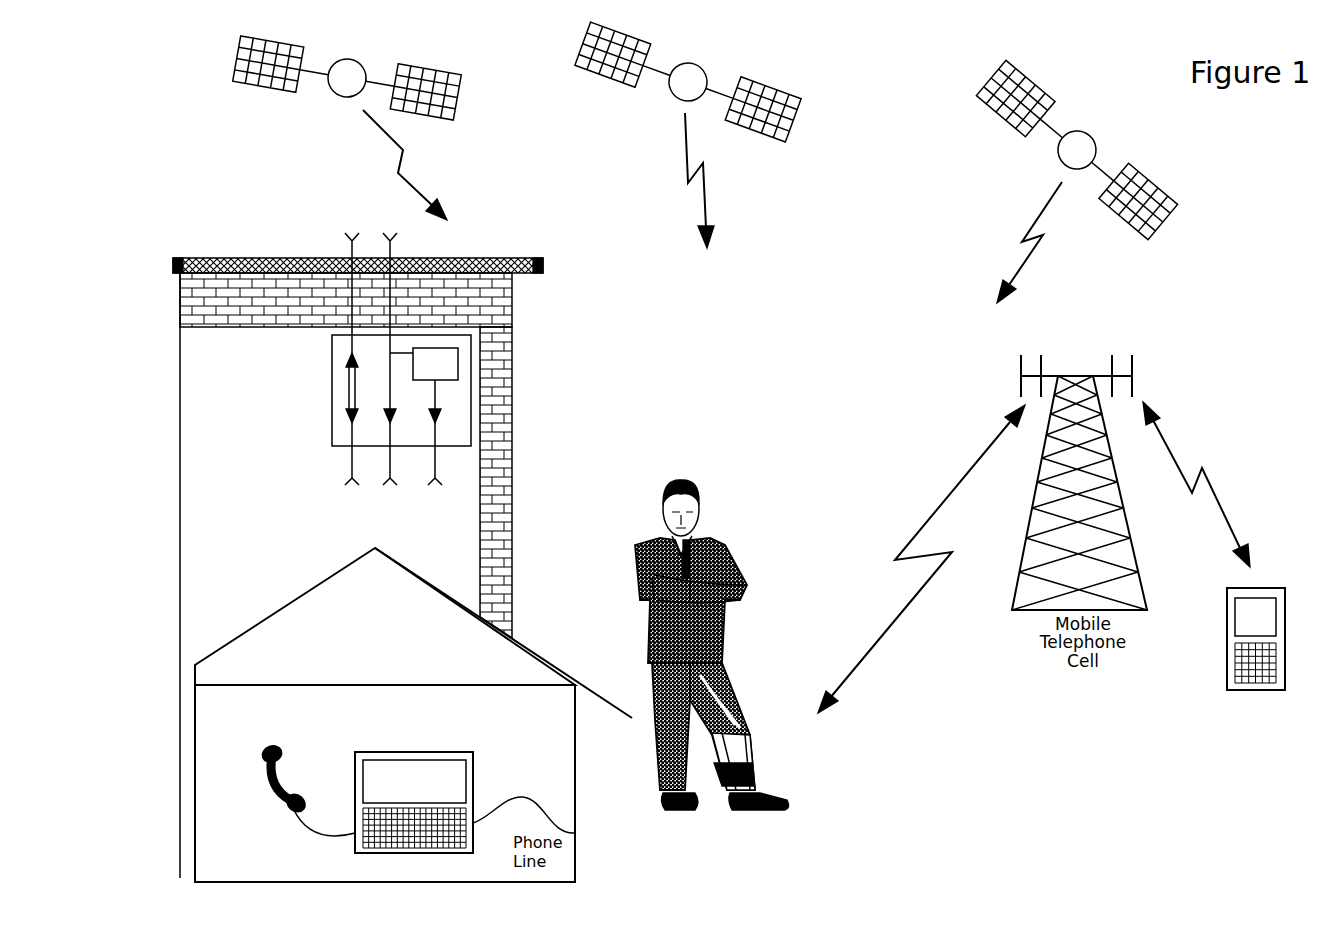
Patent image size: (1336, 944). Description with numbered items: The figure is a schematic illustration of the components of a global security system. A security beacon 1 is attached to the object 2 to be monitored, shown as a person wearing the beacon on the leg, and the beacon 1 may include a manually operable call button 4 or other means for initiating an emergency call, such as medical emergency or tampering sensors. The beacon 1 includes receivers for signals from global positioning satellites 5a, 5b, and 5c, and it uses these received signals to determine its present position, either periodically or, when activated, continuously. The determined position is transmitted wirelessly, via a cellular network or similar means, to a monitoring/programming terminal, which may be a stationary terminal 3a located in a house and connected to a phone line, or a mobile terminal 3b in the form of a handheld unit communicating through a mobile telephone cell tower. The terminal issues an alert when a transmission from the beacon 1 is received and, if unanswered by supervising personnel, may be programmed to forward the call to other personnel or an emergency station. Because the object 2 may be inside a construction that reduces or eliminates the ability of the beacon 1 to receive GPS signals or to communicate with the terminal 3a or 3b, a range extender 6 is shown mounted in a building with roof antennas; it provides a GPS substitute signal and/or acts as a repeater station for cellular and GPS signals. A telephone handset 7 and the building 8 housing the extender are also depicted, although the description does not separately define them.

The security beacon 1 is at (750, 772).
The object to be monitored 2 is at (760, 645).
The stationary monitoring/programming terminal 3a is at (468, 757).
The mobile monitoring/programming terminal 3b is at (1230, 655).
The manually operable call button 4 is at (727, 663).
The global positioning satellite 5a is at (352, 70).
The global positioning satellite 5b is at (695, 77).
The global positioning satellite 5c is at (1083, 147).
The range extender 6 is at (343, 433).
The telephone handset 7 is at (282, 752).
The building 8 is at (258, 290).